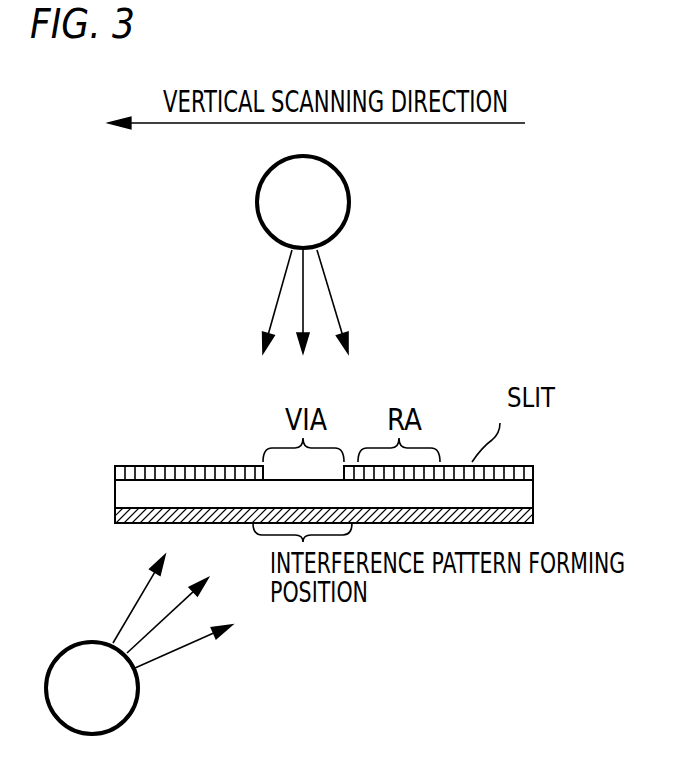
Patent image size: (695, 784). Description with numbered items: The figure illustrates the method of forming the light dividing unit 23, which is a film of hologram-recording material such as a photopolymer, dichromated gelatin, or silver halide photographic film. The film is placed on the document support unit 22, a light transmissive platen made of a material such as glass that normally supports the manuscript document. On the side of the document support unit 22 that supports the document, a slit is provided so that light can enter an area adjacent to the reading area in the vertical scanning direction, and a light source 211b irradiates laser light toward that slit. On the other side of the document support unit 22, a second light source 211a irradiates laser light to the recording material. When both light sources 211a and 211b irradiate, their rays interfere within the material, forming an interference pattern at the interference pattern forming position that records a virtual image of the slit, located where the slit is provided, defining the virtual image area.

The light source 211a is at (87, 653).
The light source 211b is at (350, 197).
The document support unit 22 is at (119, 495).
The light dividing unit 23 is at (115, 513).